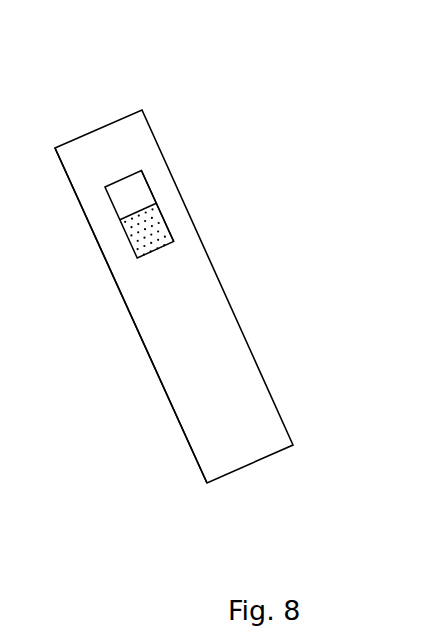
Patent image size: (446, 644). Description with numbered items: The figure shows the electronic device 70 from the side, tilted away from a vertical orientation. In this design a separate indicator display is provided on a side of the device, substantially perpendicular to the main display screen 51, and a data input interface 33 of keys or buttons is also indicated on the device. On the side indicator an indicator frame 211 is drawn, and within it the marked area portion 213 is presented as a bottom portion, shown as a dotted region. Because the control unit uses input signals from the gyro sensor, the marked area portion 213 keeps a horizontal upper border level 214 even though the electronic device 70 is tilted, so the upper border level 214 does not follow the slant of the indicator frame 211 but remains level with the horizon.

The data input interface 33 is at (150, 384).
The electronic device 70 is at (170, 164).
The main display screen 51 is at (106, 282).
The indicator frame 211 is at (107, 190).
The marked area portion 213 is at (163, 235).
The upper border level 214 is at (143, 211).